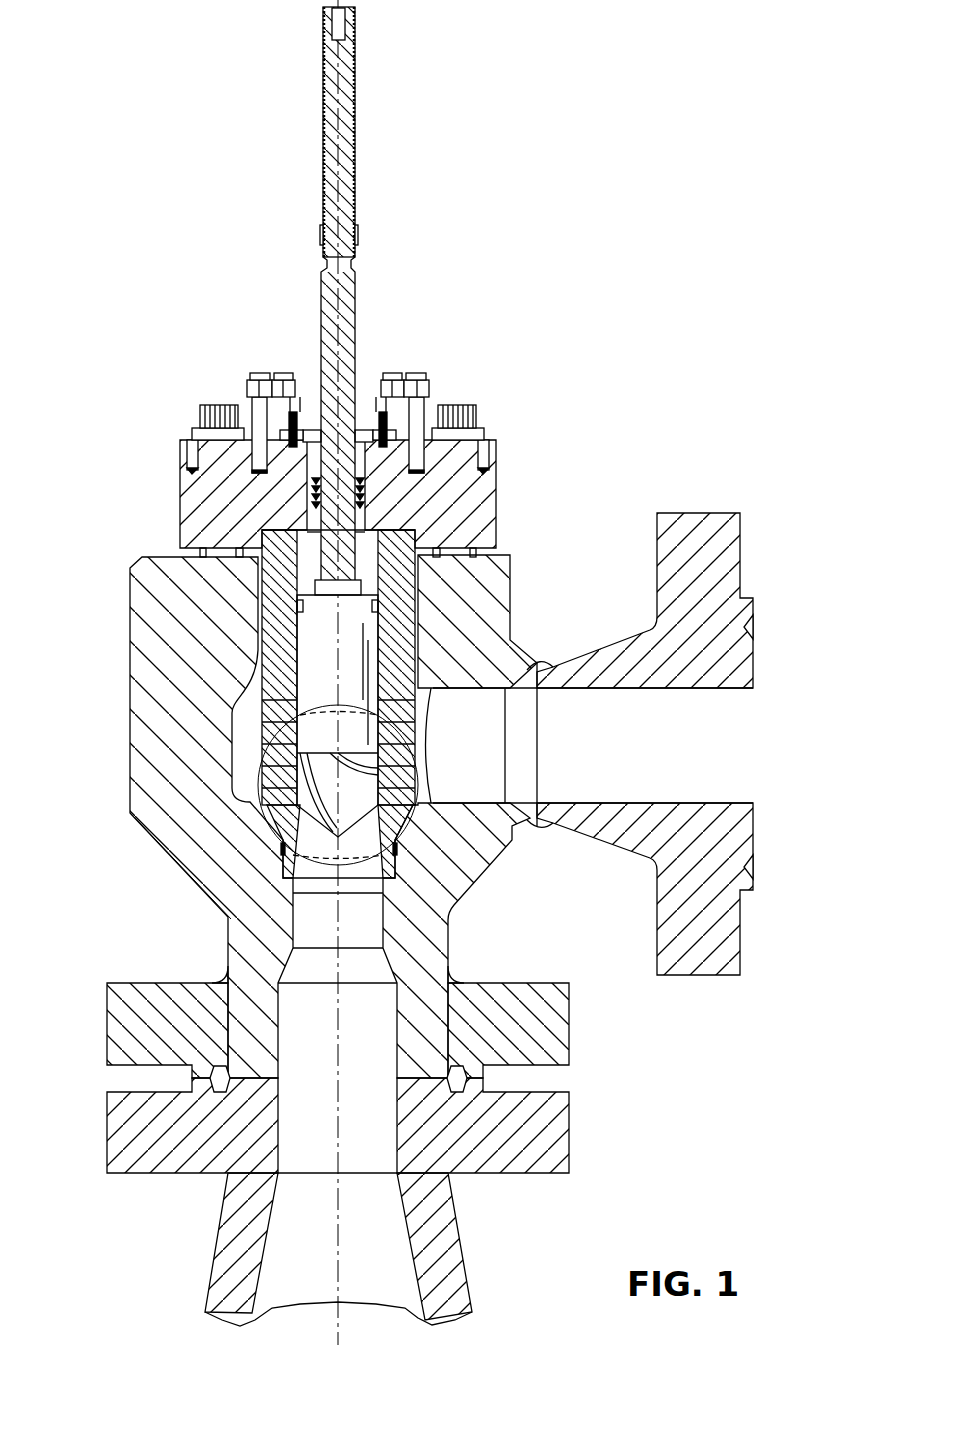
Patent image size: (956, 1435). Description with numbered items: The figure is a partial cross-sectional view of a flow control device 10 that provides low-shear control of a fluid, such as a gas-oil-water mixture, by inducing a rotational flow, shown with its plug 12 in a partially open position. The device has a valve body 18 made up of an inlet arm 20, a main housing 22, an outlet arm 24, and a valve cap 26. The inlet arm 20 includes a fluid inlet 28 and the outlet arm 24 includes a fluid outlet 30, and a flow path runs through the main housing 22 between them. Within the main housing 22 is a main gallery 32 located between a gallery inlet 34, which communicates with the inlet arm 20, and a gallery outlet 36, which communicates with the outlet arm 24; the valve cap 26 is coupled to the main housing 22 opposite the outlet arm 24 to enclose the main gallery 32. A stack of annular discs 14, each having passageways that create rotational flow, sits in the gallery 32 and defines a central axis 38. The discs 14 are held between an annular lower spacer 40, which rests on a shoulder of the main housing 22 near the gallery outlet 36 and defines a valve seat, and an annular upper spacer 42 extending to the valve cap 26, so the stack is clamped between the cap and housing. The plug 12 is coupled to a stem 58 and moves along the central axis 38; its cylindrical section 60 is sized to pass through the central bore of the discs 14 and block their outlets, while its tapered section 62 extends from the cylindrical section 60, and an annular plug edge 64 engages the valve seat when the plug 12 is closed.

The flow control device 10 is at (160, 162).
The plug 12 is at (327, 659).
The annular discs 14 is at (265, 723).
The valve body 18 is at (158, 554).
The inlet arm 20 is at (723, 560).
The main housing 22 is at (147, 785).
The outlet arm 24 is at (133, 1135).
The valve cap 26 is at (478, 497).
The fluid inlet 28 is at (708, 755).
The fluid outlet 30 is at (309, 1261).
The main gallery 32 is at (245, 745).
The gallery inlet 34 is at (464, 740).
The gallery outlet 36 is at (312, 1028).
The central axis 38 is at (343, 294).
The lower spacer 40 is at (280, 857).
The upper spacer 42 is at (400, 603).
The stem 58 is at (322, 312).
The cylindrical section 60 is at (317, 678).
The tapered section 62 is at (285, 830).
The plug edge 64 is at (323, 793).